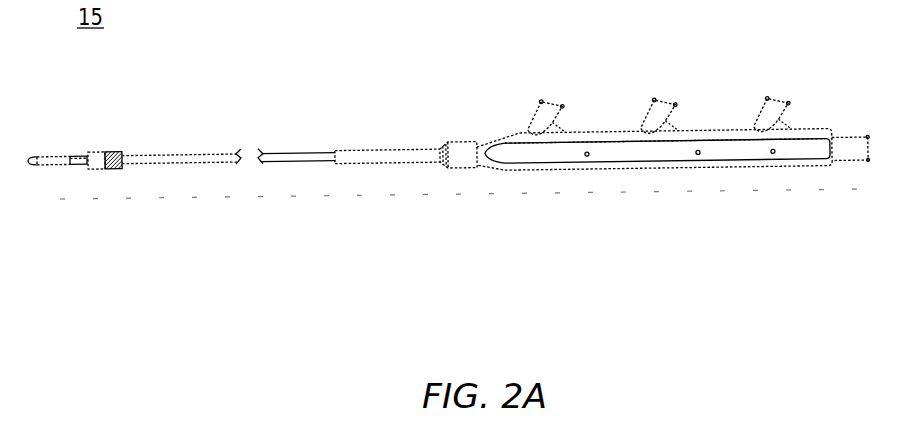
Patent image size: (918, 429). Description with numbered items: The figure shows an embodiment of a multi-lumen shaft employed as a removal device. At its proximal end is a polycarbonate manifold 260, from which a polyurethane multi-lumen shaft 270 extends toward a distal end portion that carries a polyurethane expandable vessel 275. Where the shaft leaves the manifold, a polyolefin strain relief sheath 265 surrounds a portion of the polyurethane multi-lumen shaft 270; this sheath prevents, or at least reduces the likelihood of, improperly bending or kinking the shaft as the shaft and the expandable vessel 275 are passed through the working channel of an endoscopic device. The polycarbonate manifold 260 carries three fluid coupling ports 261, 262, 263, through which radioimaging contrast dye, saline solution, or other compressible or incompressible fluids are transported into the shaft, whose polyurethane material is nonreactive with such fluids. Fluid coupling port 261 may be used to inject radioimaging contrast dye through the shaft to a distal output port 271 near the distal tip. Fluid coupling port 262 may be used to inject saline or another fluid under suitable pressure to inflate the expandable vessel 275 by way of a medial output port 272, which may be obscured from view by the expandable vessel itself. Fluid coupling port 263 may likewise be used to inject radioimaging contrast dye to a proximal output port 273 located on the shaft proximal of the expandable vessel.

The polycarbonate manifold 260 is at (670, 150).
The fluid coupling port 261 is at (575, 87).
The fluid coupling port 262 is at (689, 86).
The fluid coupling port 263 is at (803, 85).
The polyolefin strain relief sheath 265 is at (427, 155).
The polyurethane multi-lumen shaft 270 is at (307, 155).
The distal output port 271 is at (93, 129).
The medial output port 272 is at (144, 126).
The proximal output port 273 is at (179, 134).
The polyurethane expandable vessel 275 is at (135, 200).